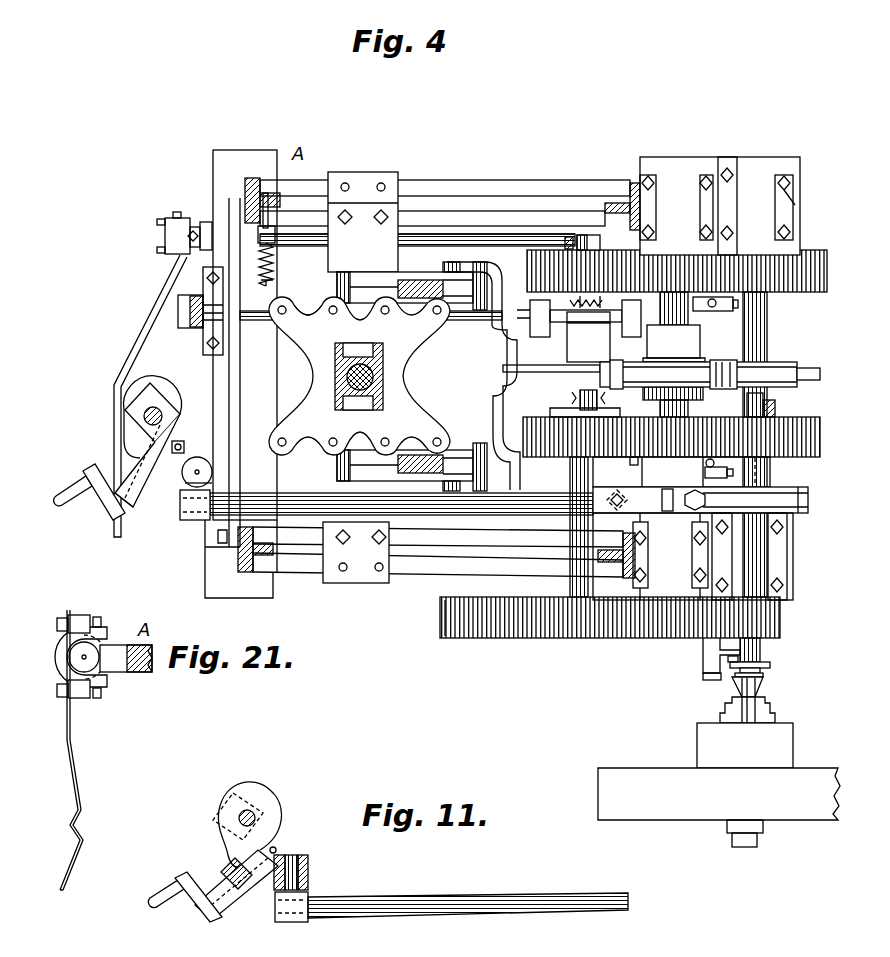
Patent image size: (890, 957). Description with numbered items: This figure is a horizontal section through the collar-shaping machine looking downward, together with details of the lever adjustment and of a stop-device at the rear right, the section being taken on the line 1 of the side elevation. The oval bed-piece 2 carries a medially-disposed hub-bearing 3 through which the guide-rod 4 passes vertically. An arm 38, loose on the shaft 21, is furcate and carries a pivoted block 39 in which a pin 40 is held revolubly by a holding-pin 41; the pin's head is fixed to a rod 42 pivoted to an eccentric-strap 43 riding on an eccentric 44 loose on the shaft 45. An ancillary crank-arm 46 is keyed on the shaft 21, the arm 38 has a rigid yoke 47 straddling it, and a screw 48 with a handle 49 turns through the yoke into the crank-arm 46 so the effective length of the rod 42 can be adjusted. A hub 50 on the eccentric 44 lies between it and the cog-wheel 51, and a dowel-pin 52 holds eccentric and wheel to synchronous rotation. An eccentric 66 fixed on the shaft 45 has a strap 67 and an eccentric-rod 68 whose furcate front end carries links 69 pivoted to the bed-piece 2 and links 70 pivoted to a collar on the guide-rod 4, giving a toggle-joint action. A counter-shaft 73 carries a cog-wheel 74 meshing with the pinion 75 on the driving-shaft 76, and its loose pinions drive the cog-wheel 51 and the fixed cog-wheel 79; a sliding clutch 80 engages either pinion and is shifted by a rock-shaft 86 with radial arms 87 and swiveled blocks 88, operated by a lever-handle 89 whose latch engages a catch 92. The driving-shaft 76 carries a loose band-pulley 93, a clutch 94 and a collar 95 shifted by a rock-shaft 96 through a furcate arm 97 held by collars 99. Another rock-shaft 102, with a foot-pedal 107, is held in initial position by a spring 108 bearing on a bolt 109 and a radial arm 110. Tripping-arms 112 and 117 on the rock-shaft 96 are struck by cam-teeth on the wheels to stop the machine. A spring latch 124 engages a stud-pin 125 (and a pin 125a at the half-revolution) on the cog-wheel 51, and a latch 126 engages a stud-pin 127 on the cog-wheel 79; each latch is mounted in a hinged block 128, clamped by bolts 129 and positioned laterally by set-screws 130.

In FIG. 4, the frame 1 is at (300, 167).
In FIG. 4, the bed-piece 2 is at (400, 390).
In FIG. 4, the hub-bearing 3 is at (337, 400).
In FIG. 4, the guide-rod 4 is at (376, 377).
In FIG. 4, the shaft 21 is at (156, 408).
In FIG. 11, the shaft 21 is at (242, 817).
In FIG. 4, the arm 38 is at (165, 427).
In FIG. 11, the arm 38 is at (276, 847).
In FIG. 4, the block 39 is at (203, 458).
In FIG. 11, the block 39 is at (310, 868).
In FIG. 11, the pin 40 is at (294, 853).
In FIG. 11, the holding-pin 41 is at (306, 858).
In FIG. 4, the rod 42 is at (507, 493).
In FIG. 11, the rod 42 is at (488, 895).
In FIG. 4, the eccentric-strap 43 is at (640, 495).
In FIG. 4, the eccentric 44 is at (662, 513).
In FIG. 4, the shaft 45 is at (669, 328).
In FIG. 4, the ancillary crank-arm 46 is at (138, 442).
In FIG. 11, the ancillary crank-arm 46 is at (228, 837).
In FIG. 4, the yoke 47 is at (136, 495).
In FIG. 11, the screw 48 is at (236, 898).
In FIG. 4, the handle 49 is at (96, 500).
In FIG. 11, the handle 49 is at (187, 902).
In FIG. 4, the hub 50 is at (697, 470).
In FIG. 4, the cog-wheel 51 is at (820, 440).
In FIG. 4, the dowel-pin 52 is at (765, 482).
In FIG. 4, the eccentric 66 is at (774, 364).
In FIG. 4, the strap 67 is at (820, 376).
In FIG. 4, the eccentric-rod 68 is at (545, 368).
In FIG. 4, the links 69 is at (413, 282).
In FIG. 4, the links 70 is at (362, 272).
In FIG. 4, the counter-shaft 73 is at (575, 468).
In FIG. 4, the cog-wheel 74 is at (540, 637).
In FIG. 4, the pinion 75 is at (778, 625).
In FIG. 4, the driving-shaft 76 is at (765, 325).
In FIG. 4, the cog-wheel 79 is at (826, 280).
In FIG. 4, the clutch 80 is at (600, 360).
In FIG. 4, the rock-shaft 86 is at (304, 306).
In FIG. 4, the radial arms 87 is at (537, 318).
In FIG. 4, the blocks 88 is at (604, 322).
In FIG. 4, the lever-handle 89 is at (198, 328).
In FIG. 4, the catch 92 is at (212, 295).
In FIG. 4, the band-pulley 93 is at (661, 775).
In FIG. 4, the clutch 94 is at (757, 720).
In FIG. 4, the collar 95 is at (763, 682).
In FIG. 4, the rock-shaft 96 is at (770, 665).
In FIG. 4, the furcate arm 97 is at (703, 660).
In FIG. 4, the collars 99 is at (705, 680).
In FIG. 4, the rock-shaft 102 is at (404, 245).
In FIG. 4, the foot-pedal 107 is at (131, 347).
In FIG. 4, the spring 108 is at (274, 263).
In FIG. 4, the bolt 109 is at (258, 293).
In FIG. 4, the radial arm 110 is at (276, 232).
In FIG. 4, the tripping-arm 112 is at (706, 468).
In FIG. 4, the tripping-arm 117 is at (708, 311).
In FIG. 4, the spring latch 124 is at (776, 415).
In FIG. 21, the spring latch 124 is at (71, 738).
In FIG. 4, the stud-pin 125 is at (775, 403).
In FIG. 4, the pin 125a is at (602, 406).
In FIG. 4, the latch 126 is at (569, 232).
In FIG. 4, the stud-pin 127 is at (600, 231).
In FIG. 21, the block 128 is at (57, 657).
In FIG. 21, the bolts 129 is at (60, 620).
In FIG. 21, the set-screws 130 is at (103, 616).